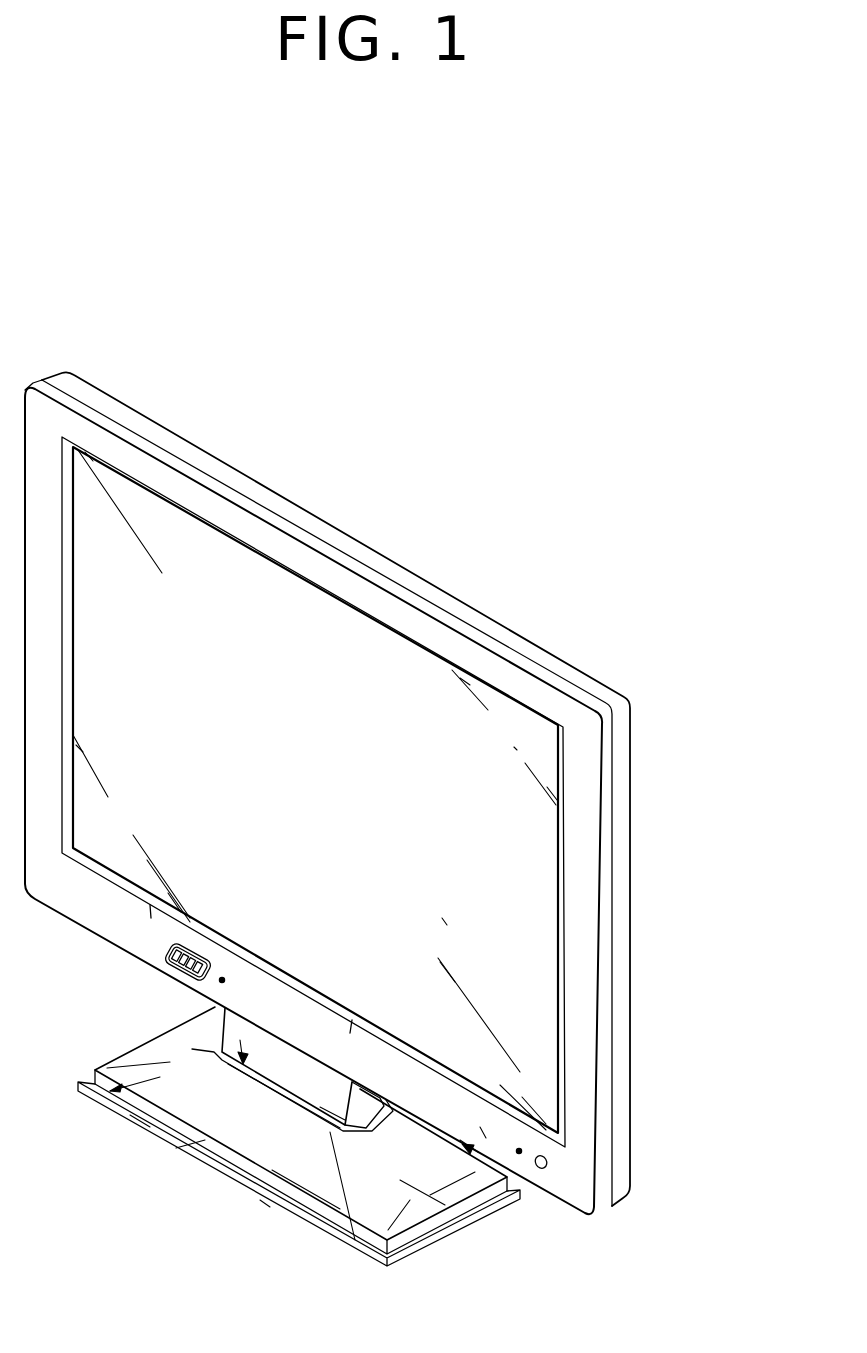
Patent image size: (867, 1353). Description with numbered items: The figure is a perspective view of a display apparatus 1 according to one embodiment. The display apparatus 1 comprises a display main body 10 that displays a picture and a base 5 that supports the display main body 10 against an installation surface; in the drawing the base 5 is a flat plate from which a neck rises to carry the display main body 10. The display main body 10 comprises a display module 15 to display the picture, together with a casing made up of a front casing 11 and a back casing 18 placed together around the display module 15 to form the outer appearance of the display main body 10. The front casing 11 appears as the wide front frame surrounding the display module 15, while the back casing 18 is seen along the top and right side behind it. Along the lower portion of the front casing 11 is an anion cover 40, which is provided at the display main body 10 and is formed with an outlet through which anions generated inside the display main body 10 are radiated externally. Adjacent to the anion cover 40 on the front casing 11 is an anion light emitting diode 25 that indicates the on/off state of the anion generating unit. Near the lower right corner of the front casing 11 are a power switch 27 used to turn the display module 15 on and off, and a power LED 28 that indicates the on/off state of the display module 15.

The display apparatus 1 is at (521, 498).
The base 5 is at (252, 1192).
The display main body 10 is at (731, 805).
The front casing 11 is at (597, 1022).
The display module 15 is at (535, 907).
The back casing 18 is at (628, 806).
The anion light emitting diode 25 is at (220, 983).
The power switch 27 is at (547, 1170).
The power LED 28 is at (519, 1156).
The anion cover 40 is at (168, 963).